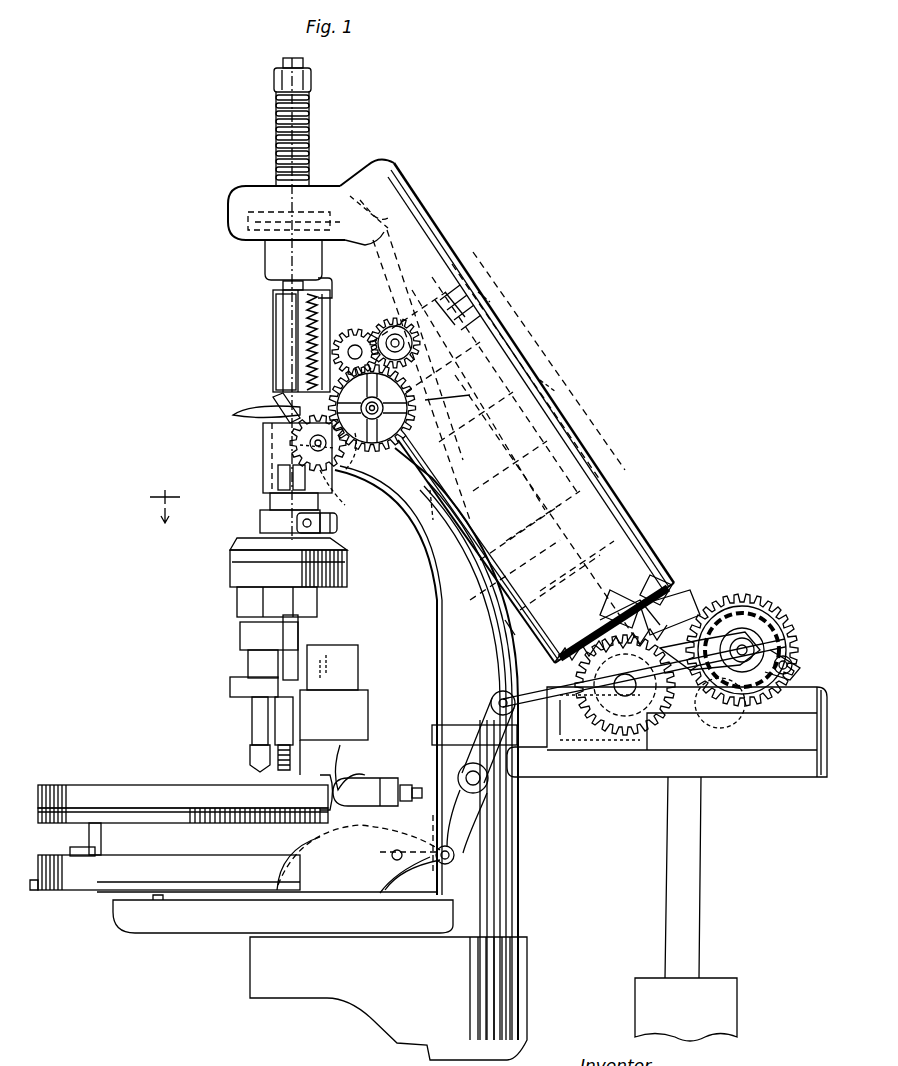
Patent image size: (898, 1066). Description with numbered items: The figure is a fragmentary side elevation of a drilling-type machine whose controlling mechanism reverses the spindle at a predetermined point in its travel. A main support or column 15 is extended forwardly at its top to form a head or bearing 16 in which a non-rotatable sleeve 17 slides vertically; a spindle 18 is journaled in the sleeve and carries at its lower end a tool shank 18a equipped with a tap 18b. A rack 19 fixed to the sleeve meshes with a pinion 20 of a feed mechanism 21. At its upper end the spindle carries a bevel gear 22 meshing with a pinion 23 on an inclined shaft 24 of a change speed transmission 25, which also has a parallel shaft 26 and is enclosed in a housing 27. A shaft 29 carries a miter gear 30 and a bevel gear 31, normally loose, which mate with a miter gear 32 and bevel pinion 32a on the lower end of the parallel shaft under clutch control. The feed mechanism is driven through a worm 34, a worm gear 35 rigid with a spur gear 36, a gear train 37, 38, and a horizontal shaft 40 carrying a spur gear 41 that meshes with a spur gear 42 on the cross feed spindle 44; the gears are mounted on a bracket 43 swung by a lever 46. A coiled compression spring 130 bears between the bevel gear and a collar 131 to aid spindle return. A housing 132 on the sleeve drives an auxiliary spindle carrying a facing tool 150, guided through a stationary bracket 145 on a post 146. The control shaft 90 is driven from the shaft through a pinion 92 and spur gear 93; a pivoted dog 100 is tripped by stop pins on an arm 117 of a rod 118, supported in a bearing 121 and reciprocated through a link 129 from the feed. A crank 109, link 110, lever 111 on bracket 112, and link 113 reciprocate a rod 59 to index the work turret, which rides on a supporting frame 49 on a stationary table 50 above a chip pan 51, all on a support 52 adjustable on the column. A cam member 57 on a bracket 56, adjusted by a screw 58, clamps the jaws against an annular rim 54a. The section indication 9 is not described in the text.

The collar 131 is at (310, 85).
The coiled compression spring 130 is at (312, 128).
The pinion 23 is at (405, 177).
The inclined shaft 24 is at (418, 210).
The bevel gear 22 is at (228, 222).
The spindle 18 is at (283, 287).
The spur gear 36 is at (357, 335).
The worm gear 35 is at (395, 320).
The worm 34 is at (482, 290).
The bracket 43 is at (430, 375).
The gear train gear 37 is at (335, 345).
The feed mechanism 21 is at (502, 350).
The horizontal shaft 40 is at (430, 400).
The housing 27 is at (548, 385).
The change speed transmission 25 is at (570, 410).
The rack 19 is at (305, 370).
The spur gear 41 is at (330, 385).
The lever 46 is at (262, 413).
The head or bearing 16 is at (262, 428).
The spur gear 42 is at (300, 445).
The cross feed spindle 44 is at (325, 455).
The gear train gear 38 is at (400, 432).
The section line 9 is at (151, 506).
The pinion 20 is at (343, 492).
The sleeve 17 is at (265, 510).
The housing 132 is at (337, 525).
The link 129 is at (444, 515).
The rod 118 is at (660, 562).
The miter gear 32 is at (622, 592).
The bevel pinion 32a is at (650, 612).
The arm 117 is at (705, 602).
The pivoted dog 100 is at (745, 632).
The crank 109 is at (758, 612).
The spur gear 93 is at (772, 640).
The miter gear 30 is at (592, 618).
The main support or column 15 is at (437, 588).
The parallel shaft 26 is at (508, 630).
The bevel gear 31 is at (573, 628).
The tool shank 18a is at (250, 640).
The post 146 is at (352, 668).
The bearing 121 is at (790, 672).
The shaft 90 is at (705, 690).
The link 110 is at (568, 700).
The facing tool 150 is at (255, 720).
The stationary bracket 145 is at (334, 732).
The cam member 57 is at (352, 790).
The shaft 29 is at (600, 722).
The pinion 92 is at (672, 735).
The tap 18b is at (252, 752).
The bracket 56 is at (385, 775).
The screw 58 is at (417, 788).
The annular rim or flange 54a is at (88, 790).
The lever 111 is at (490, 762).
The bracket 112 is at (480, 817).
The supporting frame 49 is at (92, 835).
The reciprocatory rod 59 is at (359, 854).
The link 113 is at (447, 865).
The stationary table 50 is at (70, 890).
The chip pan 51 is at (275, 912).
The support 52 is at (388, 998).